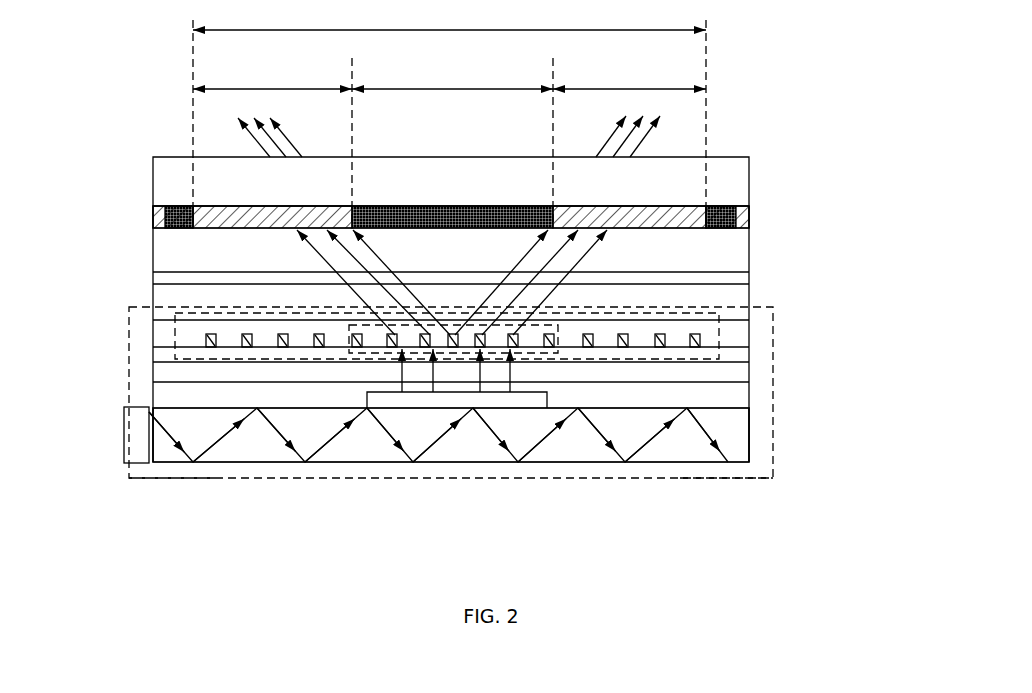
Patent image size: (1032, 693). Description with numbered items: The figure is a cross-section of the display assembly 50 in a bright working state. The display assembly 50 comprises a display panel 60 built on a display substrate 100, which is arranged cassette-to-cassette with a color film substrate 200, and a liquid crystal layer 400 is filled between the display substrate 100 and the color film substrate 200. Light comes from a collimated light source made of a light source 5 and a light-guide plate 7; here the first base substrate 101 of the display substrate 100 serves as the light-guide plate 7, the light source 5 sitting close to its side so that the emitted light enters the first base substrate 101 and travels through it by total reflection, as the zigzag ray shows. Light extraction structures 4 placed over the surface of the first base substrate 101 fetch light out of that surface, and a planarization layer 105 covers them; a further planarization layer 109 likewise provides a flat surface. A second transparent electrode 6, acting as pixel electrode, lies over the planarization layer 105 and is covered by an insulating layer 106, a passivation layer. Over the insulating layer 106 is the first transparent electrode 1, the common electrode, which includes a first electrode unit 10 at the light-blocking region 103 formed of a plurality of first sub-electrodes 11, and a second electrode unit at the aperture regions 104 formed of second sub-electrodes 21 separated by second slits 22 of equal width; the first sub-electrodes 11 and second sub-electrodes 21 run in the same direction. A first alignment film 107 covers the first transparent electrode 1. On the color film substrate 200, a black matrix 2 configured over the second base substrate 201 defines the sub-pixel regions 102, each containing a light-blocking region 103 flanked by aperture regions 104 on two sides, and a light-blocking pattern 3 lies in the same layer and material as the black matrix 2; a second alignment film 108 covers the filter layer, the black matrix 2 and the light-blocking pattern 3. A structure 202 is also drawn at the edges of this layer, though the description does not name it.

The first transparent electrode 1 is at (661, 360).
The black matrix 2 is at (712, 228).
The light-blocking pattern 3 is at (487, 215).
The light extraction structures 4 is at (428, 400).
The light source 5 is at (137, 443).
The second transparent electrode 6 is at (722, 371).
The light-guide plate 7 is at (451, 435).
The first electrode unit 10 is at (561, 358).
The first sub-electrodes 11 is at (452, 335).
The second sub-electrodes 21 is at (622, 334).
The second slits 22 is at (232, 337).
The display assembly 50 is at (97, 480).
The display panel 60 is at (773, 478).
The display substrate 100 is at (123, 384).
The first base substrate 101 is at (722, 433).
The sub-pixel regions 102 is at (449, 114).
The light-blocking region 103 is at (452, 76).
The aperture regions 104 is at (449, 143).
The planarization layer 105 is at (722, 397).
The insulating layer 106 is at (725, 353).
The first alignment film 107 is at (730, 325).
The second alignment film 108 is at (730, 277).
The planarization layer 109 is at (740, 254).
The color film substrate 200 is at (123, 213).
The second base substrate 201 is at (737, 181).
The light shielding block 202 is at (201, 213).
The liquid crystal layer 400 is at (725, 302).